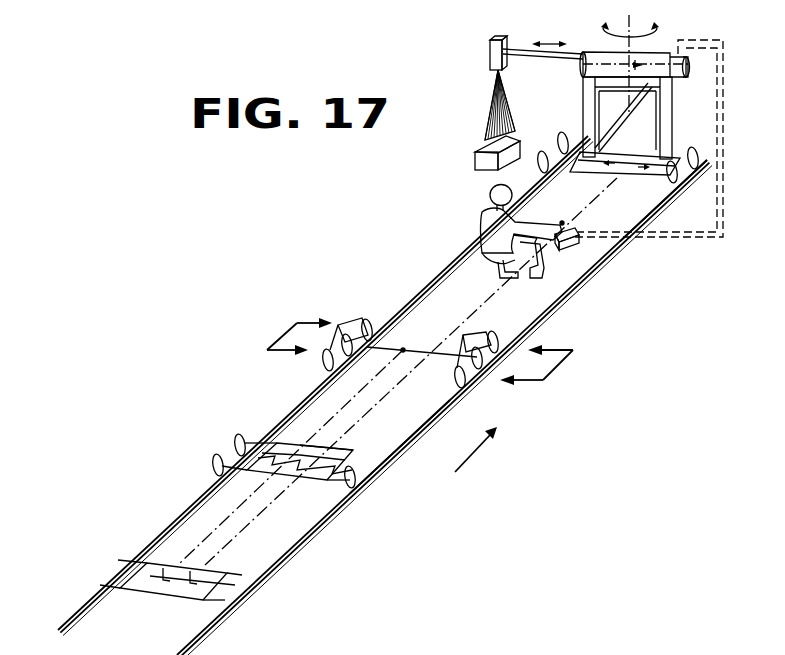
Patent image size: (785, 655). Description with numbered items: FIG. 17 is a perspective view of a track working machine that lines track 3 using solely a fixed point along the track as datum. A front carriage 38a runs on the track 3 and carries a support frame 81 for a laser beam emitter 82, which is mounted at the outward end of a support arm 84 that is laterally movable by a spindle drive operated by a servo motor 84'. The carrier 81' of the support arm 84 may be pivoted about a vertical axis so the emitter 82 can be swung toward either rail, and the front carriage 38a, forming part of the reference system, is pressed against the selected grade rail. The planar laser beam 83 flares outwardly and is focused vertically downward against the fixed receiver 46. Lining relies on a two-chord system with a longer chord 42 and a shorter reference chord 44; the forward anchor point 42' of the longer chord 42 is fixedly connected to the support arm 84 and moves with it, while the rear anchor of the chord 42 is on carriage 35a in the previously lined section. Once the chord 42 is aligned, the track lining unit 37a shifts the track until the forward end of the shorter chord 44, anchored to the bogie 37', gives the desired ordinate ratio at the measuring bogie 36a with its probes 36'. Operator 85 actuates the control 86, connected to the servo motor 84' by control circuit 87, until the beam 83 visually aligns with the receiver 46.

The track 3 is at (175, 647).
The carriage 35a is at (246, 600).
The measuring bogie 36a is at (378, 479).
The probes 36' is at (284, 451).
The bogie 37' is at (399, 330).
The track lining unit 37a is at (476, 386).
The front carriage 38a is at (687, 196).
The longer chord 42 is at (411, 371).
The forward anchor point 42' is at (614, 79).
The shorter reference chord 44 is at (200, 545).
The fixed receiver 46 is at (480, 161).
The support frame 81 is at (645, 126).
The carrier 81' is at (631, 49).
The laser beam emitter 82 is at (490, 43).
The planar laser beam 83 is at (508, 106).
The support arm 84 is at (543, 41).
The servo motor 84' is at (696, 83).
The operator 85 is at (491, 222).
The control 86 is at (565, 250).
The control circuit 87 is at (664, 240).